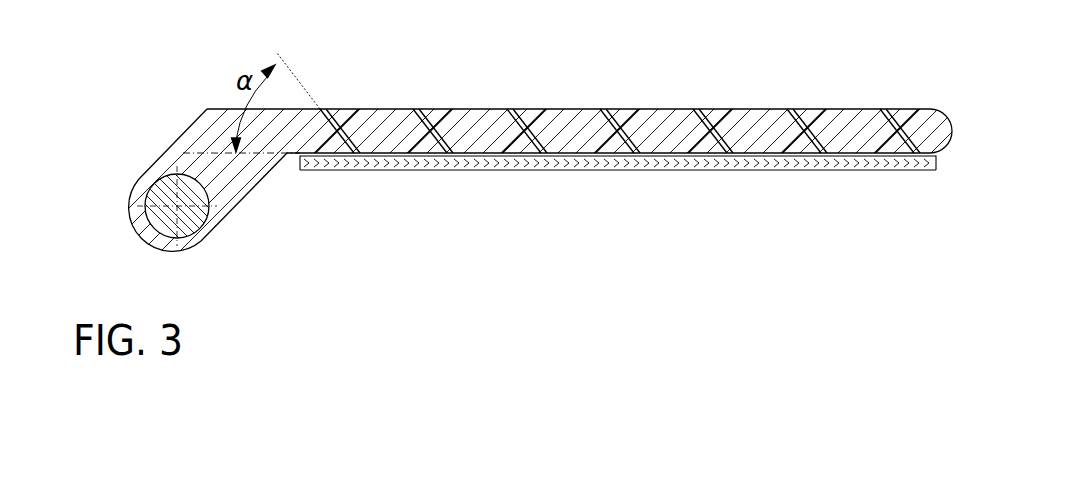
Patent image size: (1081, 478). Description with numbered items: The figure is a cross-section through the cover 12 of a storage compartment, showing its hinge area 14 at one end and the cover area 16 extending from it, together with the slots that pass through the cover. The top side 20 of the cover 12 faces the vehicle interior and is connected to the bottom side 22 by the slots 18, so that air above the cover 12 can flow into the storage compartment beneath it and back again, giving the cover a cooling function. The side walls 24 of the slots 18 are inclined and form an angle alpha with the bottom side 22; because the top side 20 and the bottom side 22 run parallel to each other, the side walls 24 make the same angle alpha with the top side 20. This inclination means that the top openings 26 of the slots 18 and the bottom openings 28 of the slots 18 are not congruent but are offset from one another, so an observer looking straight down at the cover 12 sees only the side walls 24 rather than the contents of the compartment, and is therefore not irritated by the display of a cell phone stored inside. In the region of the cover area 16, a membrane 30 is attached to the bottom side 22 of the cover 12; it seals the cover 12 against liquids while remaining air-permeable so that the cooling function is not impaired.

The cover 12 is at (975, 151).
The hinge area 14 is at (172, 210).
The cover area 16 is at (931, 130).
The slots 18 is at (626, 143).
The top side 20 is at (378, 108).
The bottom side 22 is at (313, 157).
The side walls 24 is at (336, 135).
The top openings 26 is at (326, 96).
The bottom openings 28 is at (360, 174).
The membrane 30 is at (704, 163).